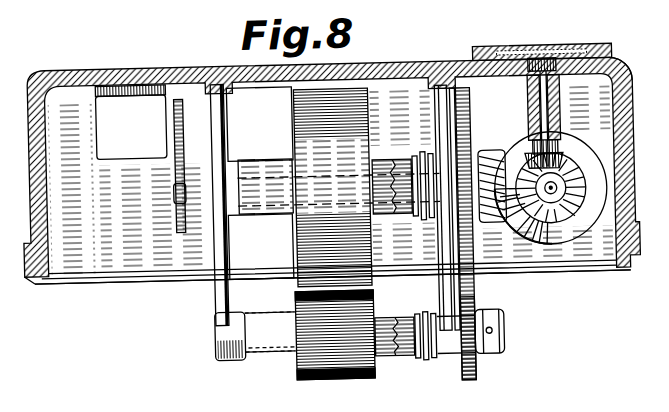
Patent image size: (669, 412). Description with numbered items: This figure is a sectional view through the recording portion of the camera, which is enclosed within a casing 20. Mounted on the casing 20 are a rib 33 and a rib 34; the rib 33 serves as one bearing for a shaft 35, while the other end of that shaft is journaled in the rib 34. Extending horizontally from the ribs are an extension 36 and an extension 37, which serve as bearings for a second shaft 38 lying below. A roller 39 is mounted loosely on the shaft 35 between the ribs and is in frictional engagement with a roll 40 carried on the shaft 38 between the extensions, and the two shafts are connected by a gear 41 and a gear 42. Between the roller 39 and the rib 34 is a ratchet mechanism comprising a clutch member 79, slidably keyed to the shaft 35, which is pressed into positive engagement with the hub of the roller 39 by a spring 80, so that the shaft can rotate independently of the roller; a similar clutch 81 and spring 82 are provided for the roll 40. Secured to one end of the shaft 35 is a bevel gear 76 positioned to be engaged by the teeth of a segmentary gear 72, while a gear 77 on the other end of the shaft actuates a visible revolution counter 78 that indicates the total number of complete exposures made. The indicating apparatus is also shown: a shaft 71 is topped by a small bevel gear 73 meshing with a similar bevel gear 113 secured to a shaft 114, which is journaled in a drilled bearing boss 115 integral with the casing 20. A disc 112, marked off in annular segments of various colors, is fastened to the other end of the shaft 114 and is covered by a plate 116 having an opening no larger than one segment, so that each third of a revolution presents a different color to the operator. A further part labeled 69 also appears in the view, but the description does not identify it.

The casing 20 is at (188, 67).
The rib 33 is at (243, 129).
The rib 34 is at (441, 137).
The shaft 35 is at (176, 188).
The extension 36 is at (211, 310).
The extension 37 is at (473, 306).
The shaft 38 is at (209, 333).
The roller 39 is at (363, 96).
The roll 40 is at (336, 379).
The gear 41 is at (464, 145).
The gear 42 is at (470, 378).
The bottom plate 69 is at (588, 277).
The shaft 71 is at (560, 193).
The segmentary gear 72 is at (592, 208).
The bevel gear 73 is at (597, 229).
The bevel gear 76 is at (492, 224).
The gear 77 is at (181, 218).
The revolution counter 78 is at (120, 100).
The clutch member 79 is at (397, 217).
The spring 80 is at (427, 224).
The clutch 81 is at (401, 364).
The spring 82 is at (424, 368).
The disc 112 is at (565, 54).
The bevel gear 113 is at (567, 173).
The shaft 114 is at (570, 134).
The bearing boss 115 is at (570, 114).
The plate 116 is at (611, 62).